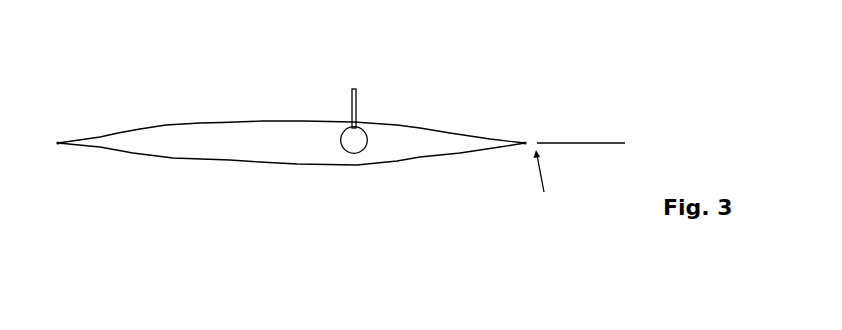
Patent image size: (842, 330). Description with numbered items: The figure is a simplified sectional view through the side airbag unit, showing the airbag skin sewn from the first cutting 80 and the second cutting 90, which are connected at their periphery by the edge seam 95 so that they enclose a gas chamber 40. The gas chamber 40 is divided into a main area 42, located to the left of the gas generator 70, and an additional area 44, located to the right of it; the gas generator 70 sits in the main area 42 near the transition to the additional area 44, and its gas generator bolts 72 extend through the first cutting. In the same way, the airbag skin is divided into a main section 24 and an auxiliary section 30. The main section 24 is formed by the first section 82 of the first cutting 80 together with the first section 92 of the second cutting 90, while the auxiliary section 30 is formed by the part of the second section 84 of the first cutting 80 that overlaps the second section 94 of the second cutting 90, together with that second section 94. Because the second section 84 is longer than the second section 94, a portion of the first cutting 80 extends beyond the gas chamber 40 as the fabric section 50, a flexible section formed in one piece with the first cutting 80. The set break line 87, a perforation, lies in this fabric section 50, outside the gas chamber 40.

The main section 24 is at (118, 133).
The auxiliary section 30 is at (443, 128).
The gas chamber 40 is at (268, 152).
The main area 42 is at (224, 140).
The additional area 44 is at (415, 147).
The fabric section 50 is at (574, 140).
The gas generator 70 is at (353, 147).
The gas generator bolts 72 is at (353, 102).
The first cutting 80 is at (262, 121).
The first section of the first cutting 82 is at (166, 126).
The second section of the first cutting 84 is at (398, 125).
The set break line 87 is at (552, 186).
The second cutting 90 is at (298, 163).
The first section of the second cutting 92 is at (175, 159).
The second section of the second cutting 94 is at (392, 163).
The edge seam 95 is at (525, 142).